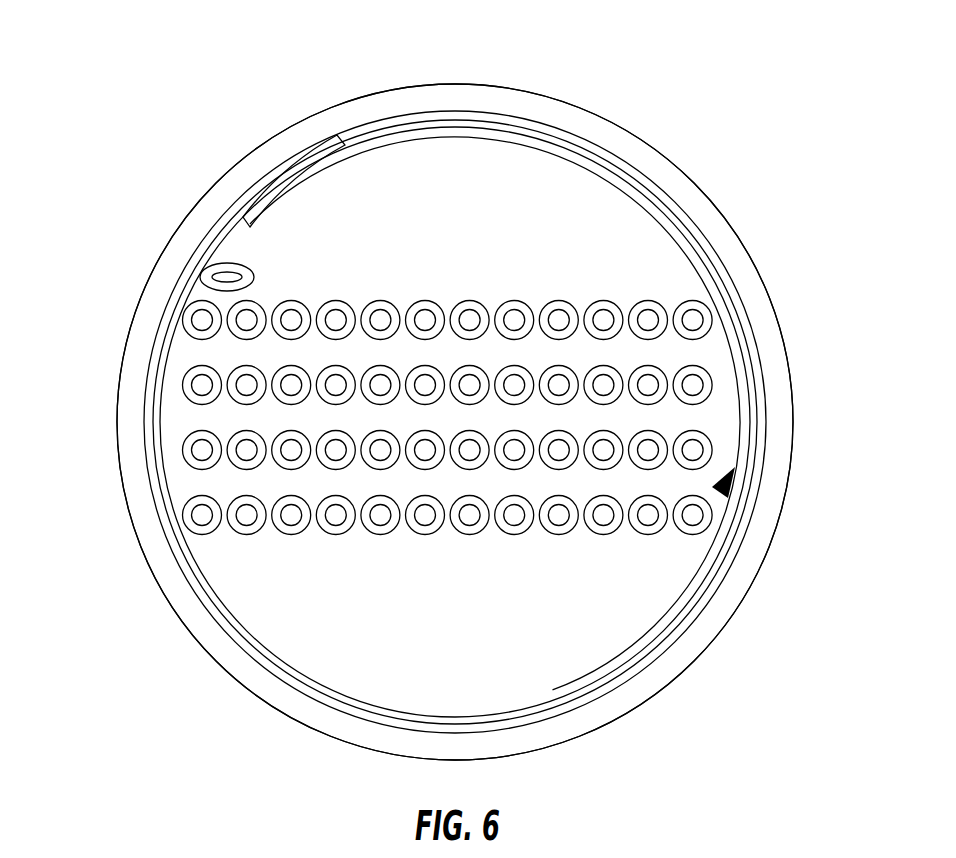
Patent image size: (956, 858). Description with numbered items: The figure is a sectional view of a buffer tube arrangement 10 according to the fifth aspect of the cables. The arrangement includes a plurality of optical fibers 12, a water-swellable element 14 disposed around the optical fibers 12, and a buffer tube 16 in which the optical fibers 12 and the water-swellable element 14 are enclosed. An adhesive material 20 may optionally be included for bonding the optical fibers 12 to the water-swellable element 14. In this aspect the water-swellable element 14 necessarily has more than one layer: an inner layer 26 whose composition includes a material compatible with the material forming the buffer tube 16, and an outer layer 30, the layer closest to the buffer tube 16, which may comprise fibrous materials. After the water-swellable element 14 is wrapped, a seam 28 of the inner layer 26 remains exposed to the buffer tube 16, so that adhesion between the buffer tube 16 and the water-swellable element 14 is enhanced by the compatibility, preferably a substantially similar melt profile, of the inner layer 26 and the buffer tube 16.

The buffer tube arrangement 10 is at (258, 100).
The optical fibers 12 is at (203, 538).
The water-swellable element 14 is at (147, 351).
The buffer tube 16 is at (793, 418).
The adhesive material 20 is at (206, 270).
The inner layer 26 is at (225, 668).
The seam 28 is at (346, 134).
The outer layer 30 is at (293, 686).